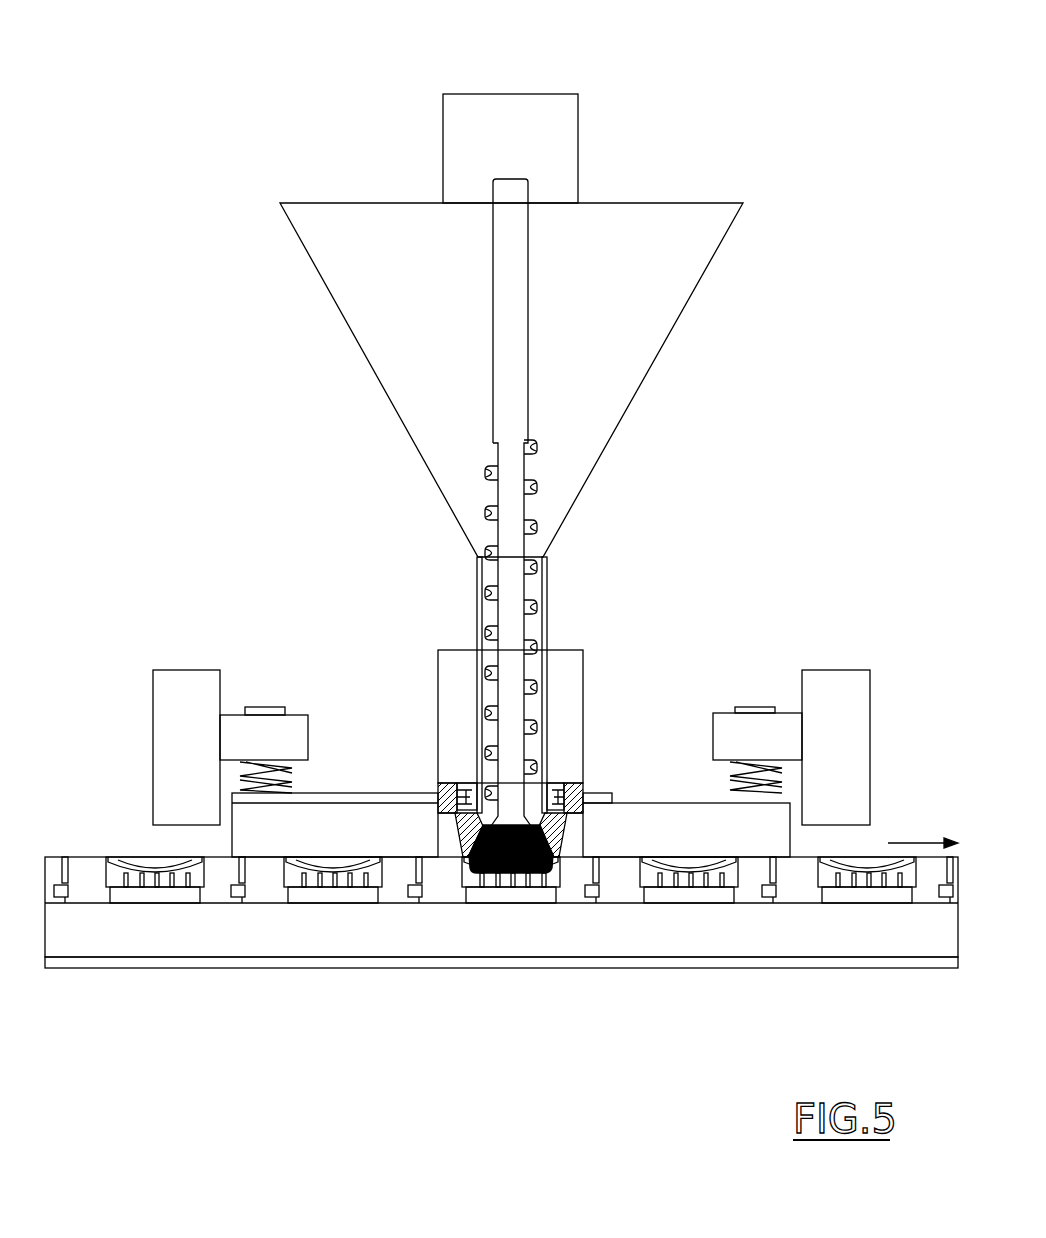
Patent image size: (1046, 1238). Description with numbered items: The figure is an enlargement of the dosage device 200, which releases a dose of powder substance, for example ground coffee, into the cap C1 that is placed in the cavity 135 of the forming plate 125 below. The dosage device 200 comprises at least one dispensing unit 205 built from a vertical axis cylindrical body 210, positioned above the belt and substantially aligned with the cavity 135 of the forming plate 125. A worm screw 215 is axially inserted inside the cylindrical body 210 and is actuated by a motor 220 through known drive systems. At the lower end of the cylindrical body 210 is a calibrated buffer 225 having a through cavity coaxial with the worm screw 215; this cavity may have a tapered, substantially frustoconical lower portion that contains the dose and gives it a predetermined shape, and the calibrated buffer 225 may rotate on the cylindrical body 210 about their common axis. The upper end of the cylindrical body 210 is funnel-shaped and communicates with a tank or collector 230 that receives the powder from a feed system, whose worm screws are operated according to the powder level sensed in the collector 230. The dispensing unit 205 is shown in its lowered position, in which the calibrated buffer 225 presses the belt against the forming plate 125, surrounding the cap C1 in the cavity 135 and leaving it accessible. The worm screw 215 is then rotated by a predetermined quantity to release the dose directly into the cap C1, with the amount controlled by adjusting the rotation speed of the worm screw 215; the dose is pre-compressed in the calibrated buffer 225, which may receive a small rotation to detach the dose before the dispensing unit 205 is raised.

The dosage device 200 is at (303, 86).
The motor 220 is at (557, 136).
The collector 230 is at (395, 355).
The worm screw 215 is at (505, 642).
The dispensing unit 205 is at (462, 618).
The cylindrical body 210 is at (476, 730).
The calibrated buffer 225 is at (578, 788).
The cap C1 is at (480, 866).
The forming plate 125 is at (743, 888).
The cavity 135 is at (554, 875).